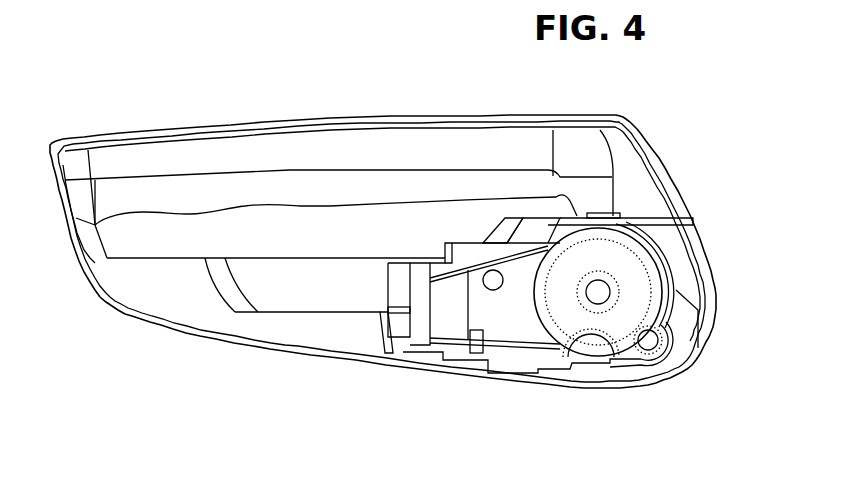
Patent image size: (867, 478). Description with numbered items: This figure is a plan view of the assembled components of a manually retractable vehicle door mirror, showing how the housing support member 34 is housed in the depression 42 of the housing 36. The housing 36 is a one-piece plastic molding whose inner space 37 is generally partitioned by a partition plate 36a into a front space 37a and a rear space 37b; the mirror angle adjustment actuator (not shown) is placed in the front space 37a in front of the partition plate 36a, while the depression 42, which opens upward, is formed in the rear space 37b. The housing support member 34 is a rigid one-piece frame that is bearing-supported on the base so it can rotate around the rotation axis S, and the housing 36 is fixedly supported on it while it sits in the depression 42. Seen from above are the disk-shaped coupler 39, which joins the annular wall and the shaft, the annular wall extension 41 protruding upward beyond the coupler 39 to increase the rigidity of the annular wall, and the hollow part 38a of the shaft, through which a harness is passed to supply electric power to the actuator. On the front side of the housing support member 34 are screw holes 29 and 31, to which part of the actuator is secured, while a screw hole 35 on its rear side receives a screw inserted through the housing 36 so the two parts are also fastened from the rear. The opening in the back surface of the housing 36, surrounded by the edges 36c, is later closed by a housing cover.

The screw hole 29 is at (418, 270).
The screw hole 31 is at (440, 330).
The housing support member 34 is at (637, 285).
The screw hole 35 is at (478, 360).
The housing 36 is at (465, 147).
The partition plate 36a is at (293, 313).
The edges 36c is at (266, 143).
The inner space 37 is at (354, 327).
The front space 37a is at (352, 190).
The rear space 37b is at (170, 298).
The hollow part 38a is at (600, 286).
The coupler 39 is at (632, 270).
The annular wall extension 41 is at (660, 258).
The depression 42 is at (521, 357).
The rotation axis S is at (600, 296).